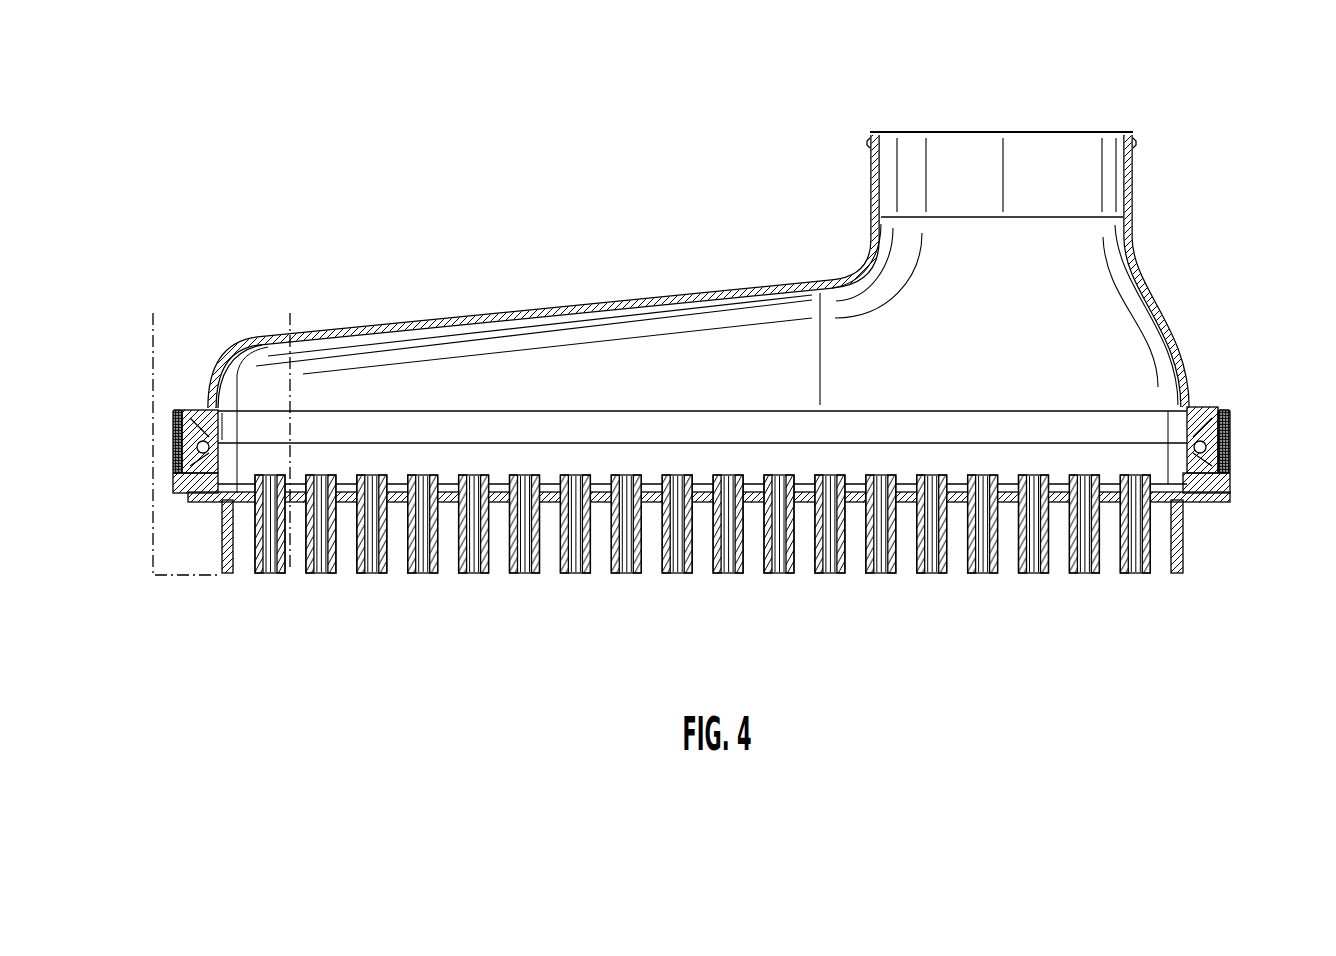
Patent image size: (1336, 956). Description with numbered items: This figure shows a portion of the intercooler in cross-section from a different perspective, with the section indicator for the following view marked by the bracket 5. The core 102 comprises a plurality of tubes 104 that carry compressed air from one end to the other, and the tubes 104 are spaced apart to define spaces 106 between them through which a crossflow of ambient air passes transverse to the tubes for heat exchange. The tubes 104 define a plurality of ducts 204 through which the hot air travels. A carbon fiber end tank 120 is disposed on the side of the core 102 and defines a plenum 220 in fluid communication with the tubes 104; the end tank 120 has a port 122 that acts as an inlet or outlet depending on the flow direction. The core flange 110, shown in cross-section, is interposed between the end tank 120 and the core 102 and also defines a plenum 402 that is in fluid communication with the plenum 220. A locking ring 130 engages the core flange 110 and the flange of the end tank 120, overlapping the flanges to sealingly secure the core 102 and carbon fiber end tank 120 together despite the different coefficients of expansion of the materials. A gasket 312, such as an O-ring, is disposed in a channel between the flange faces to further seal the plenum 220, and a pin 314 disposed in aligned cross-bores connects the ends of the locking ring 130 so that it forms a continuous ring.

The core 102 is at (221, 539).
The tubes 104 is at (1153, 568).
The spaces 106 is at (298, 555).
The core flange 110 is at (1232, 500).
The carbon fiber end tank 120 is at (557, 299).
The port 122 is at (1131, 133).
The locking ring 130 is at (1214, 404).
The ducts 204 is at (372, 555).
The plenum 220 is at (720, 387).
The gasket 312 is at (1210, 433).
The pin 314 is at (1232, 459).
The plenum 402 is at (745, 471).
The section line 5 is at (153, 313).